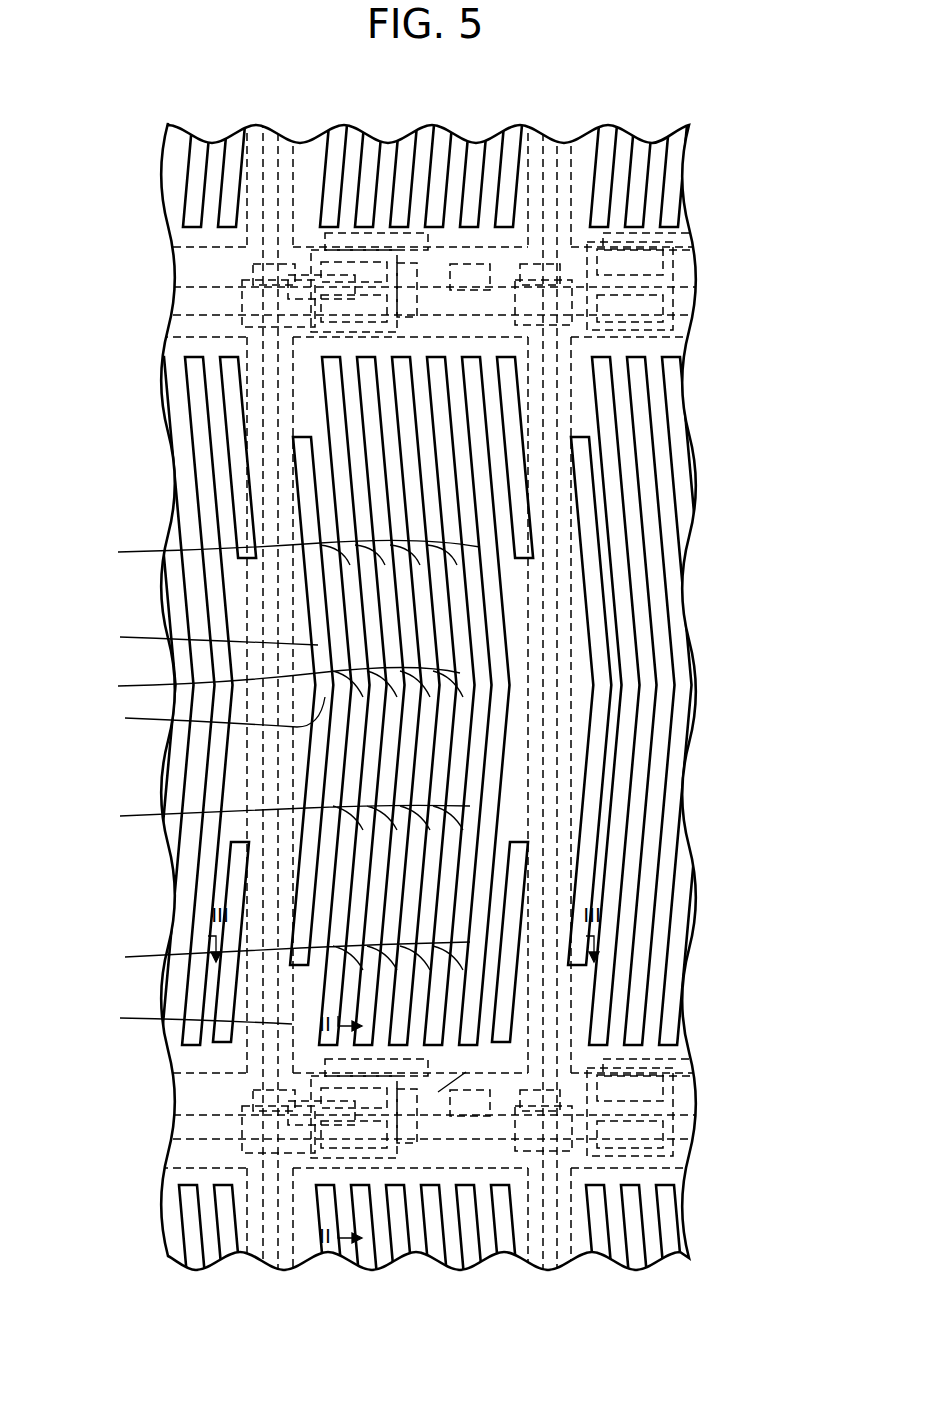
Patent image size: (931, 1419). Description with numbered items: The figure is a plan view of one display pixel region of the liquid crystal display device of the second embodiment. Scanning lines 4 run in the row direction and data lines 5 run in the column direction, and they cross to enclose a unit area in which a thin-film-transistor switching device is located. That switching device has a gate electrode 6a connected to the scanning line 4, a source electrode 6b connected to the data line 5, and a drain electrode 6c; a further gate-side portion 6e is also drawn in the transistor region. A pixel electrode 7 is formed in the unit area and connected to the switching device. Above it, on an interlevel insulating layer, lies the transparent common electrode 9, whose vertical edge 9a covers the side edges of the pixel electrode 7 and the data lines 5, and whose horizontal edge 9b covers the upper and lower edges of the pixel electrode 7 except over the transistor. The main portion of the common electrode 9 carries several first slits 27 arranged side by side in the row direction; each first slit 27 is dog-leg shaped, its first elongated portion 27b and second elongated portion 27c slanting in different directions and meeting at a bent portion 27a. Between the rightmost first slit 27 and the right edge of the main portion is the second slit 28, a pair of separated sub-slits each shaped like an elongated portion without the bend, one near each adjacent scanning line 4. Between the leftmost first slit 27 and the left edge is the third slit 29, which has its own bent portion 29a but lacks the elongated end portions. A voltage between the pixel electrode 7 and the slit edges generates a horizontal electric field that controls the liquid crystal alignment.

The scanning line 4 is at (174, 291).
The data line 5 is at (266, 128).
The gate electrode 6a is at (417, 290).
The source electrode 6b is at (268, 342).
The drain electrode 6c is at (395, 250).
The gate electrode portion 6e is at (395, 330).
The pixel electrode 7 is at (297, 150).
The common electrode 9 is at (530, 268).
The vertical edge 9a is at (464, 1068).
The horizontal edge 9b is at (184, 1019).
The first slit 27 is at (277, 957).
The bent portion 27a is at (264, 683).
The first elongated portion 27b is at (273, 551).
The second elongated portion 27c is at (269, 816).
The second slit 28 is at (515, 520).
The third slit 29 is at (201, 639).
The bent portion of third slit 29a is at (198, 715).